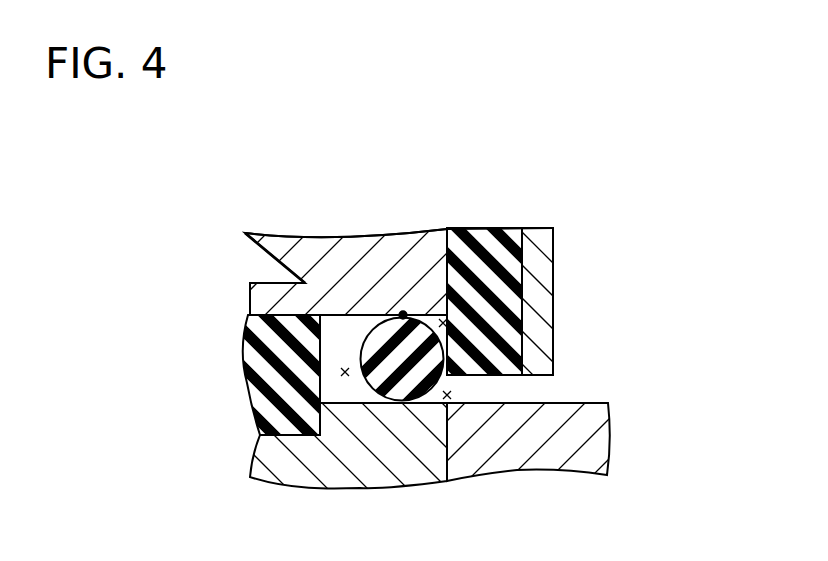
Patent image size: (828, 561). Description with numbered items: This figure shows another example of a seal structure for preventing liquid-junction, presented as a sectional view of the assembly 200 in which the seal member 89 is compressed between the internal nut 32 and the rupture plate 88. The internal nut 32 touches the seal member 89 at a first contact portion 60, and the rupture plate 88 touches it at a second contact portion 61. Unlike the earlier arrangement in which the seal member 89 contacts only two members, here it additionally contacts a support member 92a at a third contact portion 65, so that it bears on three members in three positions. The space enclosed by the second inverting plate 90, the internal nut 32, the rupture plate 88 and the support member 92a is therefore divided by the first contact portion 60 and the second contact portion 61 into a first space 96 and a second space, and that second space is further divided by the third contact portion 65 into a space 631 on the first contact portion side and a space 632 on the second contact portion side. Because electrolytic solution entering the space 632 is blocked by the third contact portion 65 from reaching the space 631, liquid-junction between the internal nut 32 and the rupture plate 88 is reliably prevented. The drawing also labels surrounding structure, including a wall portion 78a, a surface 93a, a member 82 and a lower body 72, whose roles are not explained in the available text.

The sensor assembly 200 is at (545, 178).
The internal nut 32 is at (317, 238).
The second inverting plate 90 is at (275, 237).
The first space 96 is at (345, 372).
The first contact portion 60 is at (403, 315).
The third contact portion 65 is at (535, 357).
The space on a first contact portion side 631 is at (446, 322).
The inner wall 78a is at (538, 283).
The support member 92a is at (503, 252).
The elastic member 82 is at (262, 377).
The rupture plate 88 is at (303, 470).
The seal member 89 is at (361, 404).
The second contact portion 61 is at (399, 401).
The support block 72 is at (573, 453).
The space on a second contact portion side 632 is at (520, 403).
The contact surface 93a is at (449, 395).